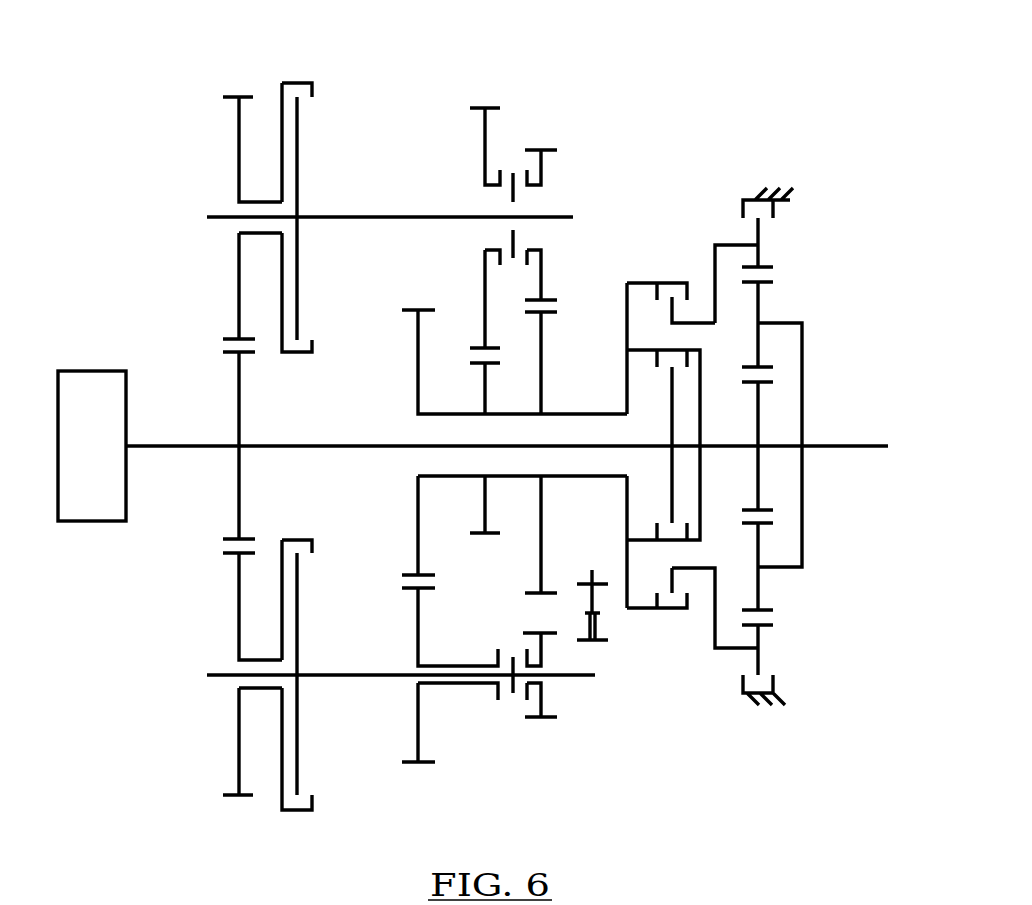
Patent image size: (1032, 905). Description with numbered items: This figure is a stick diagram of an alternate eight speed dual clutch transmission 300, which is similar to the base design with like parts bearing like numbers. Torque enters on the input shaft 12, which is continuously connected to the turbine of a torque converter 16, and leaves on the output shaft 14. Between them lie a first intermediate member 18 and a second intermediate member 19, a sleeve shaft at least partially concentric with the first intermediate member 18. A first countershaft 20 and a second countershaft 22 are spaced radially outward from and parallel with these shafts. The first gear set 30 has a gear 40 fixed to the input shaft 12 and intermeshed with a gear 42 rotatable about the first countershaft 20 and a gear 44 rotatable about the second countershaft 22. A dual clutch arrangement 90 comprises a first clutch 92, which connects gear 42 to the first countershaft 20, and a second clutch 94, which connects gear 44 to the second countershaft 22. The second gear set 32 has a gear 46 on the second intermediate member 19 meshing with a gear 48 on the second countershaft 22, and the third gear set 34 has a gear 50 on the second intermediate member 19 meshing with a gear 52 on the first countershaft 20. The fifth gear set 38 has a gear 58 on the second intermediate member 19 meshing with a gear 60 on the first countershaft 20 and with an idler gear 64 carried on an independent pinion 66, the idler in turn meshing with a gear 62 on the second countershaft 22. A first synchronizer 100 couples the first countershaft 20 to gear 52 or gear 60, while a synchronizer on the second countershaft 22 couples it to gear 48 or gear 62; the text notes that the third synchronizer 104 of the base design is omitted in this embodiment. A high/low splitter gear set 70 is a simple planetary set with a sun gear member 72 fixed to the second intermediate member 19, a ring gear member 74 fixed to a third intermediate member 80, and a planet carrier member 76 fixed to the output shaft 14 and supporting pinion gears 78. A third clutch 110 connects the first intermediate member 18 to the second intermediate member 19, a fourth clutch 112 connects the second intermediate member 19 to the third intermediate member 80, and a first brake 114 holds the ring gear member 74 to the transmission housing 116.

The input shaft 12 is at (178, 446).
The output shaft 14 is at (842, 447).
The torque converter 16 is at (105, 462).
The first intermediate member 18 is at (290, 446).
The second intermediate member 19 is at (578, 413).
The first countershaft 20 is at (215, 215).
The second countershaft 22 is at (220, 677).
The first gear set 30 is at (165, 577).
The second gear set 32 is at (394, 565).
The third gear set 34 is at (465, 314).
The fifth gear set 38 is at (574, 271).
The gear 40 is at (237, 375).
The gear 42 is at (238, 266).
The gear 44 is at (238, 607).
The gear 46 is at (418, 495).
The gear 48 is at (418, 622).
The gear 50 is at (482, 402).
The gear 52 is at (485, 263).
The gear 58 is at (508, 560).
The gear 60 is at (541, 272).
The gear 62 is at (543, 648).
The idler gear 64 is at (587, 597).
The pinion 66 is at (597, 618).
The high/low splitter gear set 70 is at (828, 242).
The sun gear member 72 is at (760, 423).
The ring gear member 74 is at (760, 252).
The planet carrier member 76 is at (787, 323).
The pinion gears 78 is at (760, 303).
The third intermediate member 80 is at (715, 254).
The dual clutch arrangement 90 is at (204, 74).
The first clutch 92 is at (296, 82).
The second clutch 94 is at (295, 812).
The first synchronizer 100 is at (513, 197).
The third synchronizer 104 is at (513, 688).
The third clutch 110 is at (688, 363).
The fourth clutch 112 is at (627, 297).
The first brake 114 is at (743, 207).
The transmission housing 116 is at (755, 198).
The transmission 300 is at (701, 108).